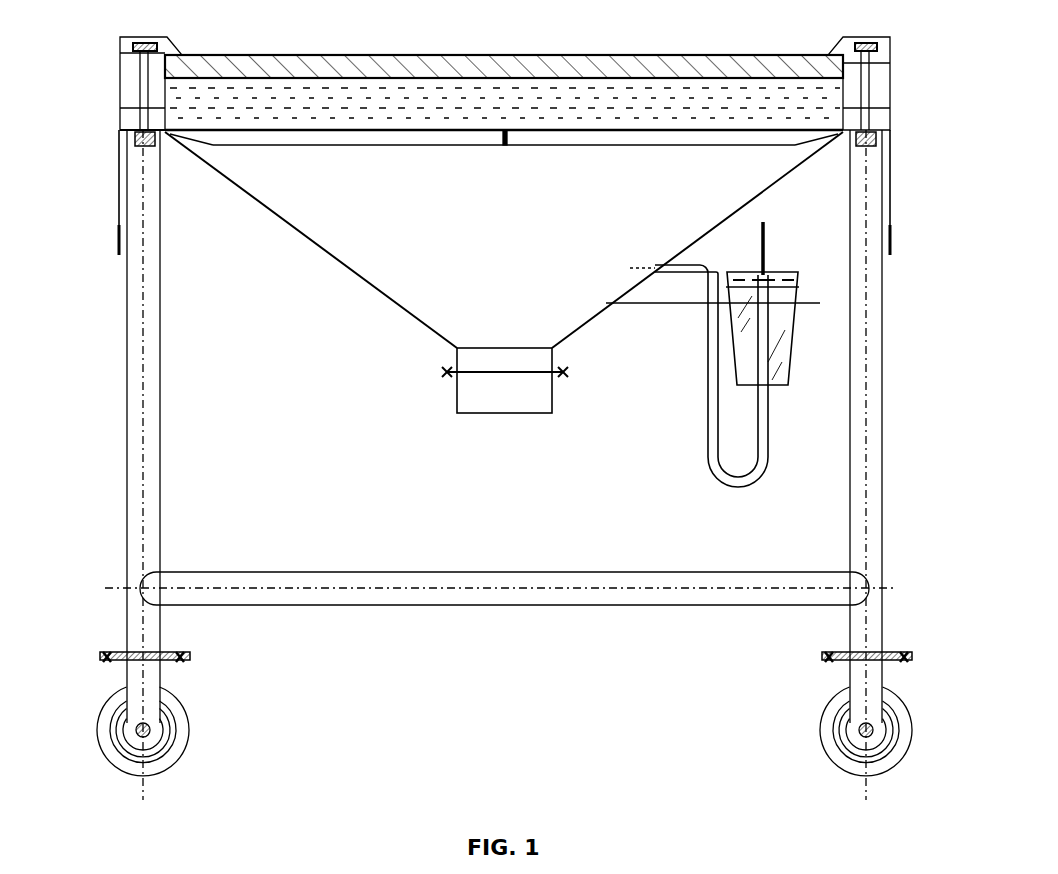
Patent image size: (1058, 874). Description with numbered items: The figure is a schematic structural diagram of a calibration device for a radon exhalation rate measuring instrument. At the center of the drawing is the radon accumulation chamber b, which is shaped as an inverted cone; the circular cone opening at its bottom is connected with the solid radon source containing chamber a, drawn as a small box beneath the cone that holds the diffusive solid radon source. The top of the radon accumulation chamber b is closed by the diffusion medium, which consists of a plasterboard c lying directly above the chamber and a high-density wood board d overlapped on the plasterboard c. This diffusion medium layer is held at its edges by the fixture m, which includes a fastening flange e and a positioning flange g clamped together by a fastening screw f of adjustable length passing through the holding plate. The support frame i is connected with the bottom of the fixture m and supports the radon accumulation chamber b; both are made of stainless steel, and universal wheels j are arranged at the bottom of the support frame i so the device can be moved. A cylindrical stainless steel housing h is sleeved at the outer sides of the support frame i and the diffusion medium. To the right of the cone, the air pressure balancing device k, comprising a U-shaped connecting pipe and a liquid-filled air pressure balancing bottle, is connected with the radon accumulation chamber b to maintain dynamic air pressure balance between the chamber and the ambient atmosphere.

The solid radon source containing chamber a is at (517, 398).
The radon accumulation chamber b is at (400, 260).
The plasterboard c is at (845, 100).
The high-density wood board d is at (705, 68).
The fastening flange e is at (120, 53).
The fastening screw f is at (165, 87).
The positioning flange g is at (165, 117).
The housing h is at (119, 183).
The support frame i is at (127, 333).
The universal wheel j is at (97, 732).
The air pressure balancing device k is at (800, 343).
The fixture m is at (882, 82).